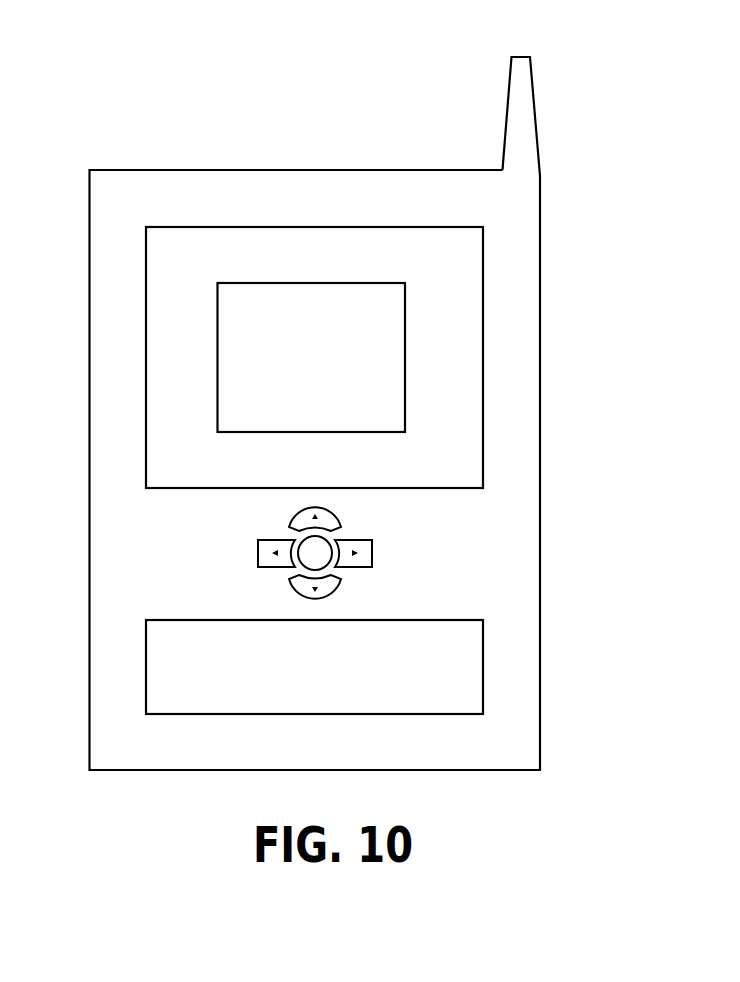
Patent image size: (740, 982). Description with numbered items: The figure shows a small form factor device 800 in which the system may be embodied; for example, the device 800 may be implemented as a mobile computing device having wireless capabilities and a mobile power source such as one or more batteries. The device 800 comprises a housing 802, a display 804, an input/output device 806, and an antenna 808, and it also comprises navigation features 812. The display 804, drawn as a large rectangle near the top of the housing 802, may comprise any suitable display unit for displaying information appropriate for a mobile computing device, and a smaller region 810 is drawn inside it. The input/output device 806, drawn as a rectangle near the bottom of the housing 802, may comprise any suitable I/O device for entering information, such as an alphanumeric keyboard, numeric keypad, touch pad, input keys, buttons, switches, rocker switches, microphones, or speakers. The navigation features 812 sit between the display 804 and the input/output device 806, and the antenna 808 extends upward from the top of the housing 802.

The small form factor device 800 is at (100, 62).
The housing 802 is at (540, 470).
The display 804 is at (483, 244).
The input/output (I/O) device 806 is at (483, 657).
The antenna 808 is at (507, 105).
The display window / image region 810 is at (405, 376).
The navigation features 812 is at (396, 540).